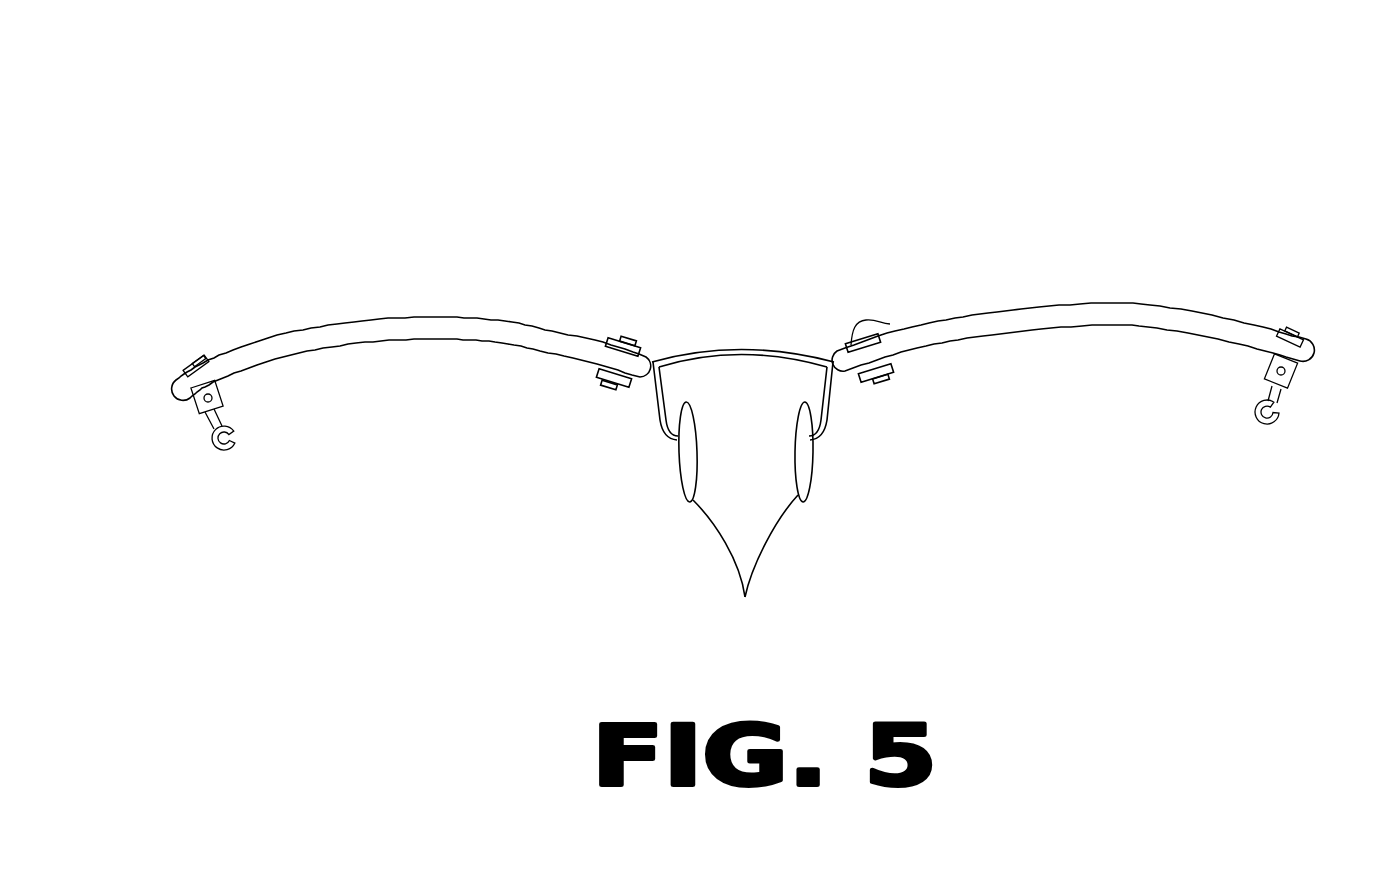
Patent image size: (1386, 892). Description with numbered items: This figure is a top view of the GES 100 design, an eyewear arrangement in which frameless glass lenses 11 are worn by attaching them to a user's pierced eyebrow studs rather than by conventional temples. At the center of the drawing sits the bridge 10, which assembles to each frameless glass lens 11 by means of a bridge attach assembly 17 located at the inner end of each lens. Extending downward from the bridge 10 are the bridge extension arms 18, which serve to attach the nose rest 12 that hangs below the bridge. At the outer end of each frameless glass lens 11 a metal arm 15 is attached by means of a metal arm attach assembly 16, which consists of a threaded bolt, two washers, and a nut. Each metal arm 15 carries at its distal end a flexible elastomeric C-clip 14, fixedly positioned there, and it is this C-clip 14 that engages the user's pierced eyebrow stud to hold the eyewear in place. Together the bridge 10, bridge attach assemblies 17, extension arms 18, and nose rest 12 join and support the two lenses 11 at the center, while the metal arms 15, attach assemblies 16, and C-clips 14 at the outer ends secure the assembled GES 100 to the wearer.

The GES 100 is at (772, 183).
The bridge 10 is at (748, 350).
The frameless glass lens 11 is at (492, 320).
The nose rest 12 is at (745, 597).
The flexible elastomeric C-clip 14 is at (220, 452).
The metal arm 15 is at (232, 390).
The metal arm attach assembly 16 is at (188, 360).
The bridge attach assembly 17 is at (882, 322).
The bridge extension arm 18 is at (661, 431).